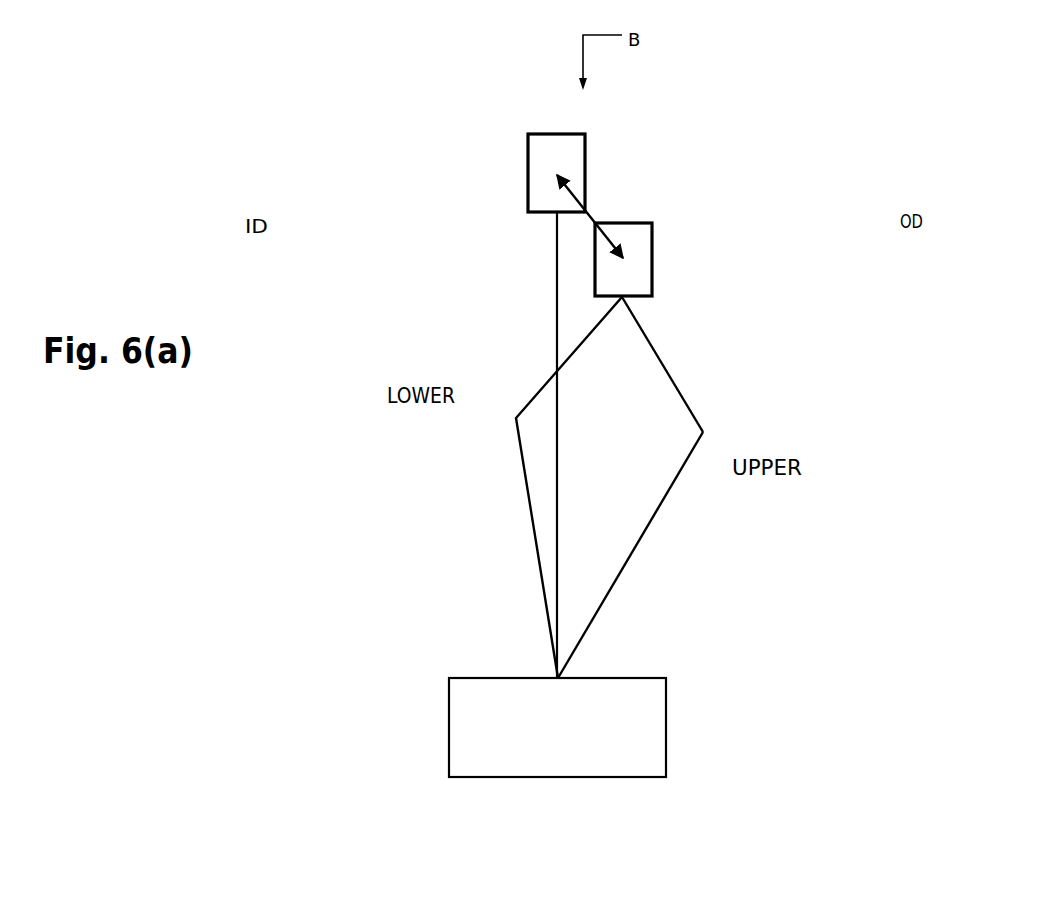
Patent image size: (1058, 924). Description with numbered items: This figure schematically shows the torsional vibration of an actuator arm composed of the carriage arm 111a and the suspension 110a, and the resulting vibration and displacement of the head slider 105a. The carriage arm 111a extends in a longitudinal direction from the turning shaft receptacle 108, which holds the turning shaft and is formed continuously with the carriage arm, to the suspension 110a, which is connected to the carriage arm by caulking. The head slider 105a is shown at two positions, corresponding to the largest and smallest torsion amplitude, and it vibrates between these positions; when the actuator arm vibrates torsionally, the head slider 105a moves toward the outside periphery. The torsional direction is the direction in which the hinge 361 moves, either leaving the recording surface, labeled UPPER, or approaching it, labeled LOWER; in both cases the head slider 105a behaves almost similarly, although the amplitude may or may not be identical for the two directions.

The head slider 105a is at (586, 148).
The suspension 110a is at (665, 362).
The carriage arm 111a is at (662, 508).
The hinge 361 is at (516, 420).
The turning shaft receptacle 108 is at (666, 723).